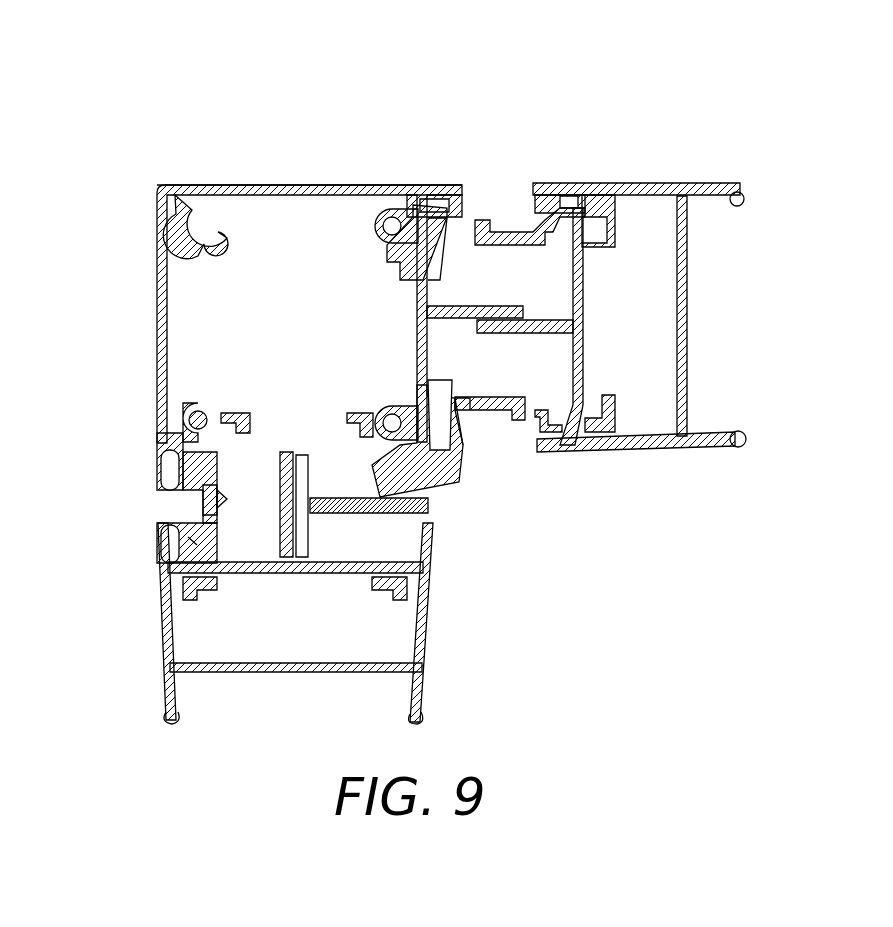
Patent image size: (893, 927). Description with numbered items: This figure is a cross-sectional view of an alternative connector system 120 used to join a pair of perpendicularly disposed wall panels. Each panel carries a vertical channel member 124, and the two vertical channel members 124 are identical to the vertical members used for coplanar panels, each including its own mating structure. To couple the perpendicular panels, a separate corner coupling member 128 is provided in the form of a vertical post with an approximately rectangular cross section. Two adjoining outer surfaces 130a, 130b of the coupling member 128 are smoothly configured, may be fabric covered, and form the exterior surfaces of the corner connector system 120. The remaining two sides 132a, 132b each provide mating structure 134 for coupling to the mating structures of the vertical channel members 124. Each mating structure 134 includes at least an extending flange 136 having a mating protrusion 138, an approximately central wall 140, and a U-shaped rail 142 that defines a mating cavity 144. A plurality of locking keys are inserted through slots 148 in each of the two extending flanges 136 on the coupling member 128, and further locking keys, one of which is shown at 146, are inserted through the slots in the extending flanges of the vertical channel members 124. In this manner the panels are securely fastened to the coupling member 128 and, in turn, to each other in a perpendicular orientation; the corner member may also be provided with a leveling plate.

The connector system 120 is at (510, 122).
The vertical channel member 124 is at (628, 186).
The corner coupling member 128 is at (240, 186).
The outer surface 130a is at (113, 391).
The outer surface 130b is at (327, 184).
The side 132a is at (157, 472).
The side 132b is at (472, 413).
The mating structure 134 is at (509, 256).
The extending flange 136 is at (485, 400).
The mating protrusion 138 is at (457, 410).
The central wall 140 is at (497, 303).
The U-shaped rail 142 is at (473, 186).
The mating cavity 144 is at (443, 226).
The locking key 146 is at (430, 508).
The slot 148 is at (200, 512).